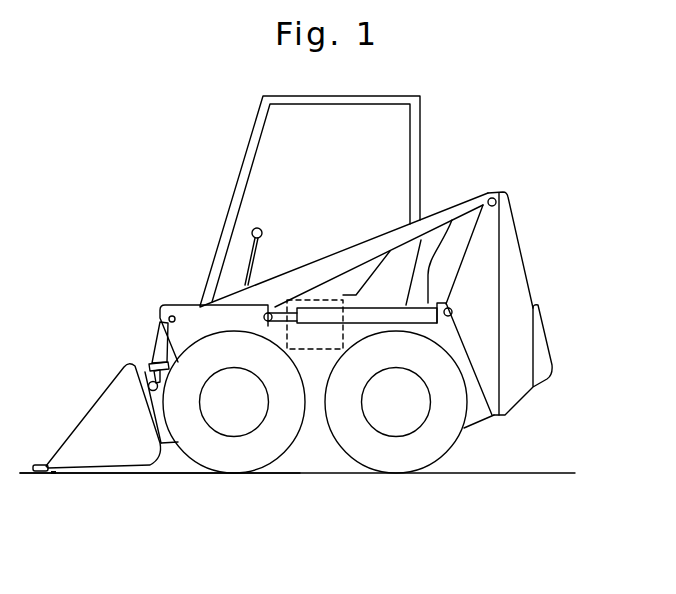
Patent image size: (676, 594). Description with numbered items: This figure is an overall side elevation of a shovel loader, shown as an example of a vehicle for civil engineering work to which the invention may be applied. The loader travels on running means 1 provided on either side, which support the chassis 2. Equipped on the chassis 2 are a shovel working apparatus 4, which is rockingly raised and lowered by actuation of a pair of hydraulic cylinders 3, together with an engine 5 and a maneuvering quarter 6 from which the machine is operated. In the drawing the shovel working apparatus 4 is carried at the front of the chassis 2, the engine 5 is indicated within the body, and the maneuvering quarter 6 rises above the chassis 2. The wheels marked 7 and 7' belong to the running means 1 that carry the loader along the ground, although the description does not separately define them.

The running means 1 is at (183, 481).
The chassis 2 is at (317, 369).
The hydraulic cylinders 3 is at (456, 206).
The shovel working apparatus 4 is at (114, 354).
The engine 5 is at (343, 300).
The maneuvering quarter 6 is at (272, 198).
The rear wheel 7 is at (396, 441).
The front wheel 7' is at (234, 441).